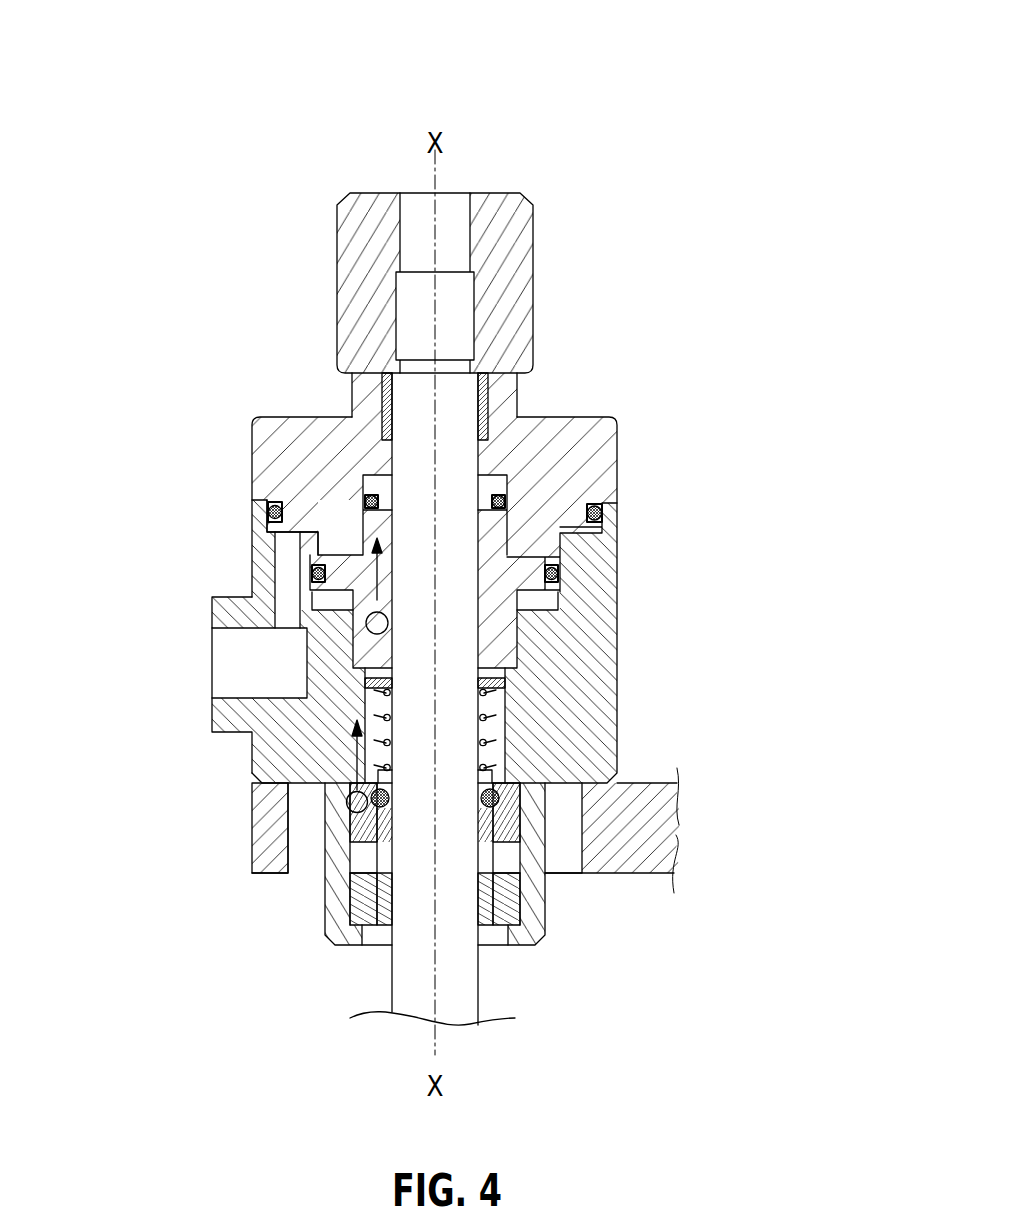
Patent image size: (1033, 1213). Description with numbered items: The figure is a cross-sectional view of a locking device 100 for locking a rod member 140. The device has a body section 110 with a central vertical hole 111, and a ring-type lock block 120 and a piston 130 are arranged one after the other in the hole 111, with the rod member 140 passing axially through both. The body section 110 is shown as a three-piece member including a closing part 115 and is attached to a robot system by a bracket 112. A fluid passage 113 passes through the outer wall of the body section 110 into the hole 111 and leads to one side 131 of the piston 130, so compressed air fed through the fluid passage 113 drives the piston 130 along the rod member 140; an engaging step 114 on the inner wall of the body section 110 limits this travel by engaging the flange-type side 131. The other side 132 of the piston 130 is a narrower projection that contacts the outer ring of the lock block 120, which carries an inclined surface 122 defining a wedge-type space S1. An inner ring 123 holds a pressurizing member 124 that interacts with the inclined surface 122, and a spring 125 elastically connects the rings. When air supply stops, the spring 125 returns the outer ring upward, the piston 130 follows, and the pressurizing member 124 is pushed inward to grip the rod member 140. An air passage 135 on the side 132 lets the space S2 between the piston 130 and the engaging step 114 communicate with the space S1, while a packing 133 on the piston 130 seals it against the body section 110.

The locking device 100 is at (599, 108).
The body section 110 is at (640, 532).
The vertical hole 111 is at (481, 424).
The bracket 112 is at (647, 848).
The fluid passage 113 is at (236, 686).
The engaging step 114 is at (326, 598).
The closing part 115 is at (357, 900).
The lock block 120 is at (534, 696).
The inclined surface 122 is at (582, 787).
The inner ring 123 is at (380, 853).
The pressurizing member 124 is at (482, 803).
The spring 125 is at (500, 778).
The piston 130 is at (532, 644).
The one side of the piston 131 is at (316, 531).
The other side of the piston 132 is at (353, 647).
The packing 133 is at (368, 497).
The air passage 135 is at (357, 692).
The rod member 140 is at (505, 973).
The wedge-type space S1 is at (496, 735).
The space between piston and engaging step S2 is at (540, 592).